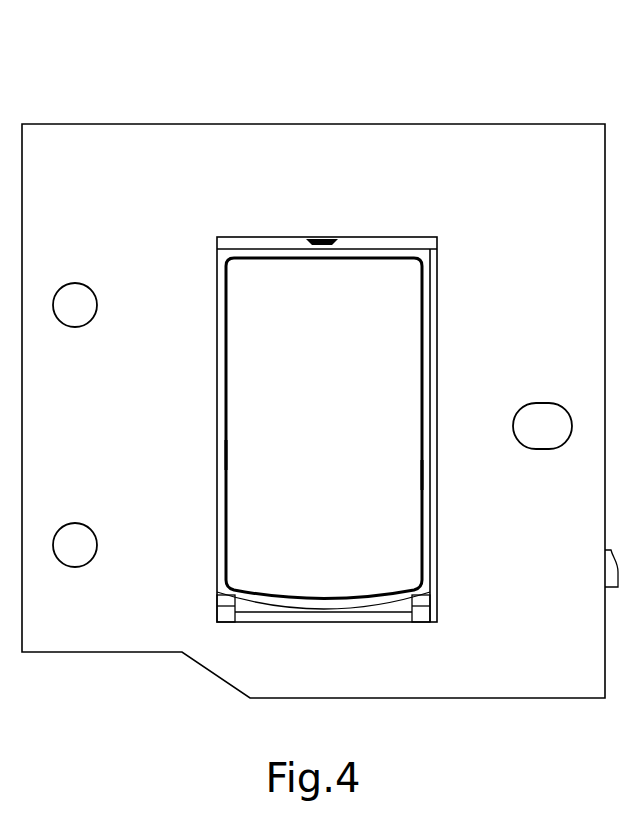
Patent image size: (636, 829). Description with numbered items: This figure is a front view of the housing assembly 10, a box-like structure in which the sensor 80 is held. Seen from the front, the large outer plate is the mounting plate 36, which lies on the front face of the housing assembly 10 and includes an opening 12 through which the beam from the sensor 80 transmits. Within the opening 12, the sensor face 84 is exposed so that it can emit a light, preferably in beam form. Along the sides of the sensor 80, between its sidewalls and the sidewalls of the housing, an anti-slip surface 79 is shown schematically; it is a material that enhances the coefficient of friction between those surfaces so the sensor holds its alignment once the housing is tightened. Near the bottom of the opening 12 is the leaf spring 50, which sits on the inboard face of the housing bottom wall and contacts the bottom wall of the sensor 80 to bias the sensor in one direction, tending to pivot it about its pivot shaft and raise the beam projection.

The housing assembly 10 is at (252, 40).
The opening 12 is at (366, 247).
The mounting plate 36 is at (553, 155).
The sensor face 84 is at (375, 377).
The anti-slip surface 79 is at (229, 461).
The sensor 80 is at (343, 560).
The leaf spring 50 is at (250, 613).